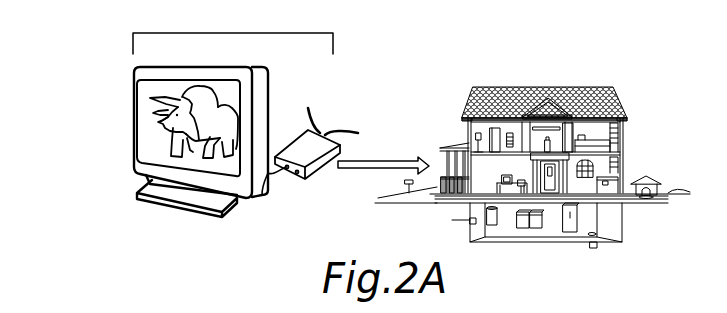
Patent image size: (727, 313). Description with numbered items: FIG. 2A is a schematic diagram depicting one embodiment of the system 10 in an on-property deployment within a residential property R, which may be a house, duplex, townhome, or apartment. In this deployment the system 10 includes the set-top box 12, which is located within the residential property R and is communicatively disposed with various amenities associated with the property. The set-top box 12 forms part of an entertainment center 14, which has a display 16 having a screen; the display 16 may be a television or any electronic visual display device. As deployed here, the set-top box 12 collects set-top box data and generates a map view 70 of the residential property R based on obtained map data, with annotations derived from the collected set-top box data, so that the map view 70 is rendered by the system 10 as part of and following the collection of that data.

The system 10 is at (96, 84).
The set-top box 12 is at (328, 178).
The entertainment center 14 is at (333, 121).
The display 16 is at (268, 90).
The map view 70 is at (566, 84).